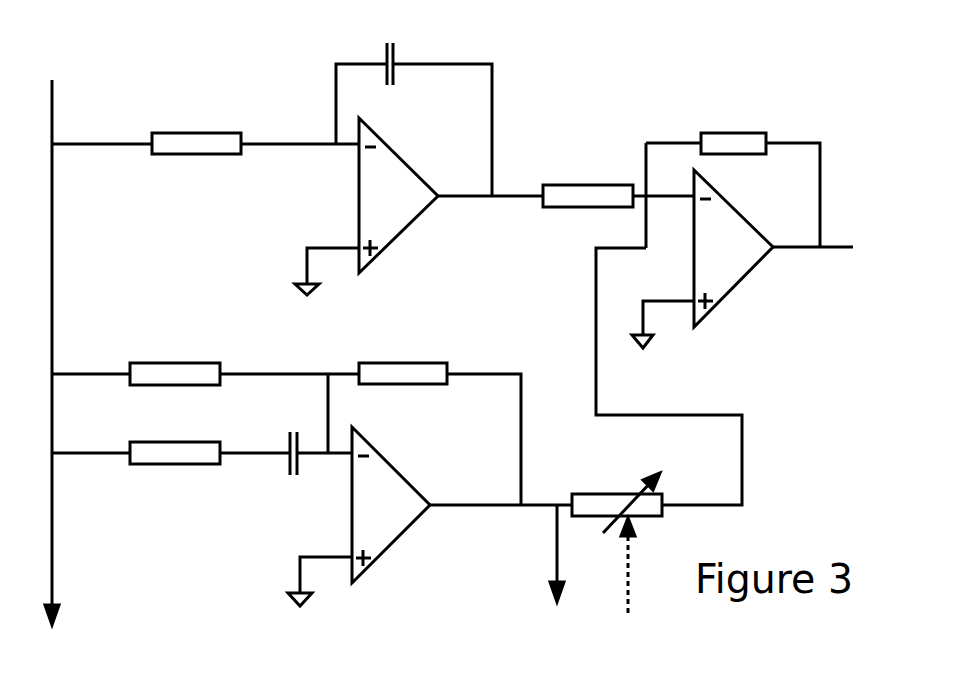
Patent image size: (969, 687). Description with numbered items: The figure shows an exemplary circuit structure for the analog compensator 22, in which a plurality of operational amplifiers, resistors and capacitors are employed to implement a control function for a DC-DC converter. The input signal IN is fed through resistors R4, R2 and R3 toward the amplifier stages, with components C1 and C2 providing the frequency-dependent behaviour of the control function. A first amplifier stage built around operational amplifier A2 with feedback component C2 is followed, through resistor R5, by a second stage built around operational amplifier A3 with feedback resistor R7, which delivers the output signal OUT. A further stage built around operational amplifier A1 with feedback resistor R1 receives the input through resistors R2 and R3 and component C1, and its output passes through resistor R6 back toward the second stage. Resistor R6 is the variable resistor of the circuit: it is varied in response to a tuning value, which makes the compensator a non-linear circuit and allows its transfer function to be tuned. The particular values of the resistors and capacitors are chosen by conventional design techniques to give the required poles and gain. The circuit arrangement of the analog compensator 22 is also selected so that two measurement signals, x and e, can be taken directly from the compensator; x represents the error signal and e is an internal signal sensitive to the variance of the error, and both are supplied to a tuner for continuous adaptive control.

The analog compensator 22 is at (189, 31).
The resistor R1 is at (403, 356).
The resistor R2 is at (175, 355).
The resistor R3 is at (175, 435).
The resistor R4 is at (196, 123).
The resistor R5 is at (588, 177).
The variable tuning resistor R6 is at (617, 494).
The resistor R7 is at (733, 125).
The analog controller C1 is at (285, 439).
The analog controller C2 is at (414, 112).
The operational amplifier A1 is at (359, 516).
The operational amplifier A2 is at (366, 206).
The operational amplifier A3 is at (702, 259).